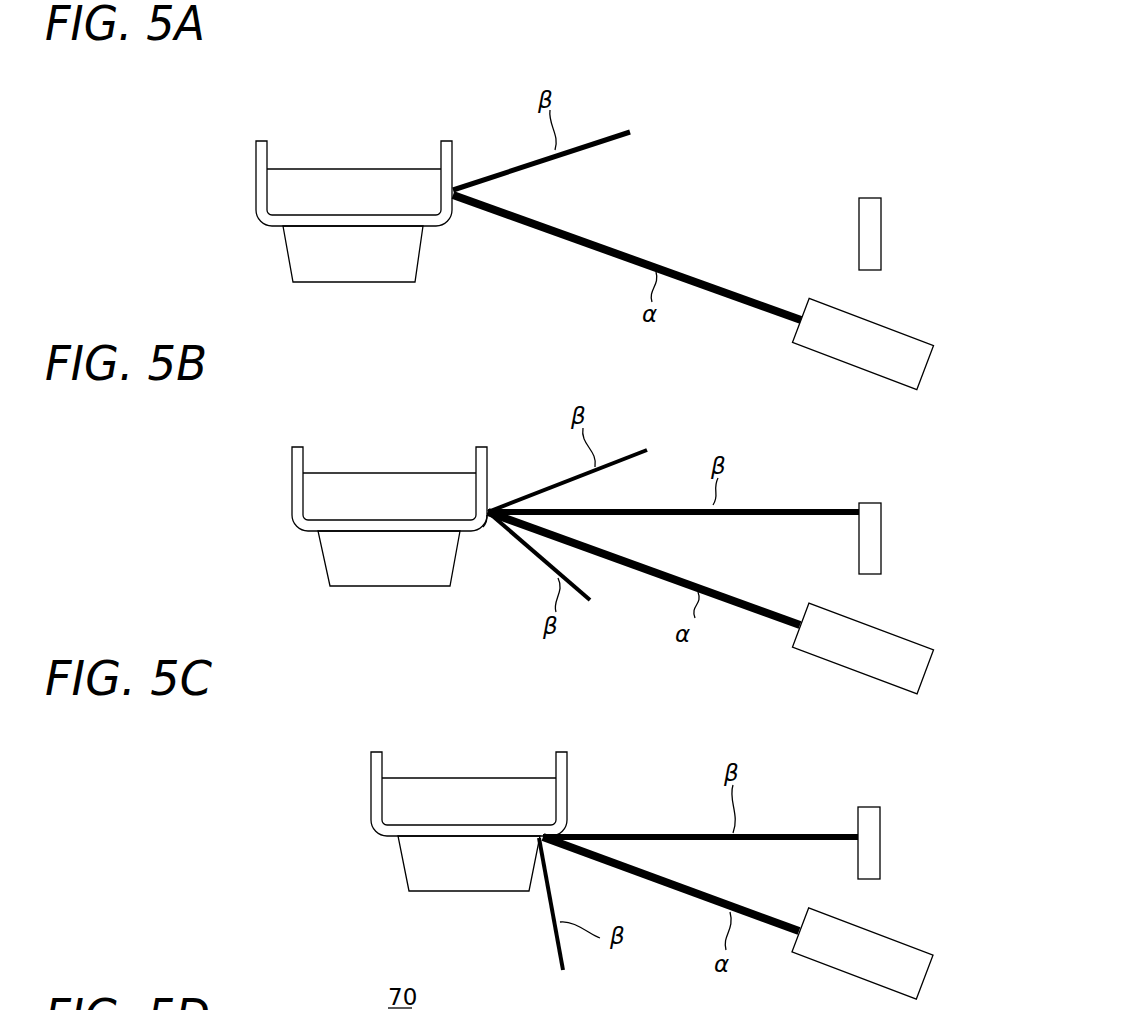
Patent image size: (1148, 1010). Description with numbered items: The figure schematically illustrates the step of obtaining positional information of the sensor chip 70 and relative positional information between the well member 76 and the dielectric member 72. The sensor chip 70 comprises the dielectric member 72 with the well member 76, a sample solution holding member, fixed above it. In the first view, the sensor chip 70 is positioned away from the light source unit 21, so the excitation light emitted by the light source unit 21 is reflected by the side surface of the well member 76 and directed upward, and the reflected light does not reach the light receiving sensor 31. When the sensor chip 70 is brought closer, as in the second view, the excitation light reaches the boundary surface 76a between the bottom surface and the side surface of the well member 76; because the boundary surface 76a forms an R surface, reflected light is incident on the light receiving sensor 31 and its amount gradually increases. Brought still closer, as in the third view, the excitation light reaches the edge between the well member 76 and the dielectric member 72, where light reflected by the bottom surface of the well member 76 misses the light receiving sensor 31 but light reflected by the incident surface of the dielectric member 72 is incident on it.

In FIG. 5A, the light source unit 21 is at (875, 335).
In FIG. 5B, the light source unit 21 is at (890, 640).
In FIG. 5C, the light source unit 21 is at (900, 950).
In FIG. 5A, the light receiving sensor 31 is at (872, 226).
In FIG. 5B, the light receiving sensor 31 is at (872, 542).
In FIG. 5C, the light receiving sensor 31 is at (872, 848).
In FIG. 5A, the sensor chip 70 is at (258, 112).
In FIG. 5B, the sensor chip 70 is at (290, 412).
In FIG. 5C, the sensor chip 70 is at (370, 720).
In FIG. 5A, the dielectric member 72 is at (402, 262).
In FIG. 5B, the dielectric member 72 is at (336, 570).
In FIG. 5C, the dielectric member 72 is at (420, 880).
In FIG. 5A, the well member 76 is at (258, 181).
In FIG. 5B, the well member 76 is at (298, 489).
In FIG. 5C, the well member 76 is at (375, 797).
In FIG. 5B, the boundary surface 76a is at (485, 527).